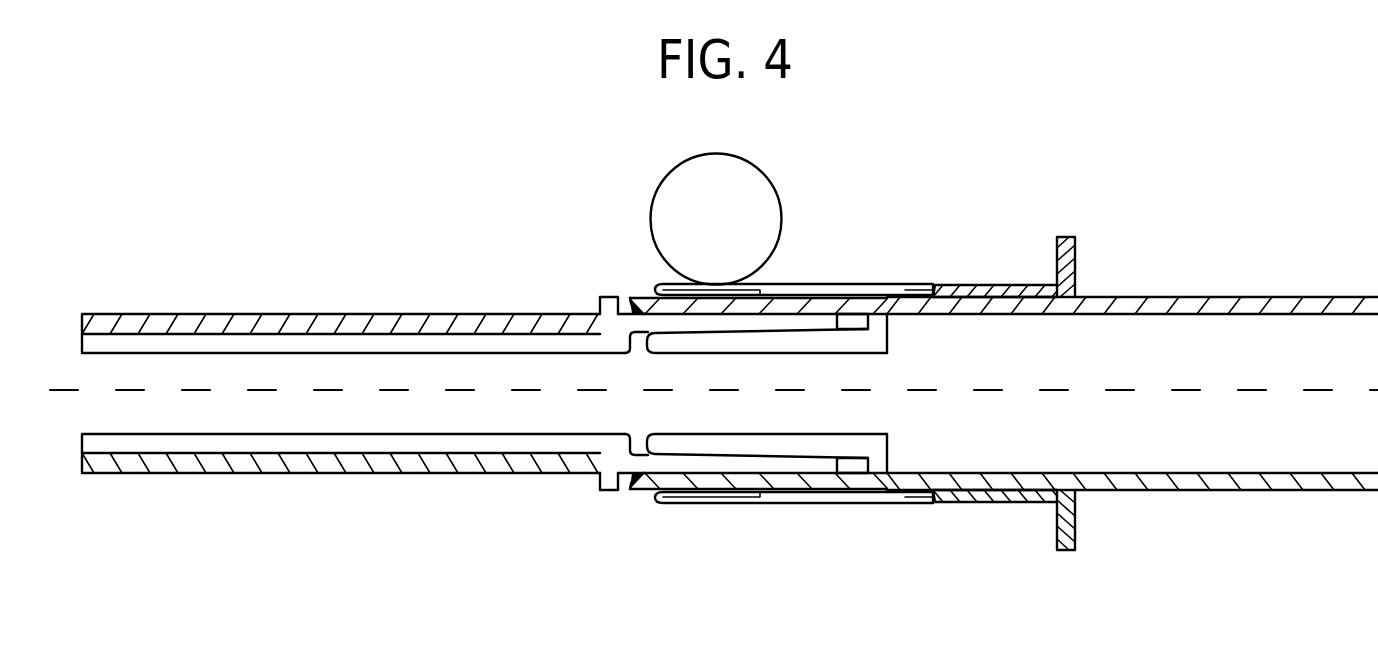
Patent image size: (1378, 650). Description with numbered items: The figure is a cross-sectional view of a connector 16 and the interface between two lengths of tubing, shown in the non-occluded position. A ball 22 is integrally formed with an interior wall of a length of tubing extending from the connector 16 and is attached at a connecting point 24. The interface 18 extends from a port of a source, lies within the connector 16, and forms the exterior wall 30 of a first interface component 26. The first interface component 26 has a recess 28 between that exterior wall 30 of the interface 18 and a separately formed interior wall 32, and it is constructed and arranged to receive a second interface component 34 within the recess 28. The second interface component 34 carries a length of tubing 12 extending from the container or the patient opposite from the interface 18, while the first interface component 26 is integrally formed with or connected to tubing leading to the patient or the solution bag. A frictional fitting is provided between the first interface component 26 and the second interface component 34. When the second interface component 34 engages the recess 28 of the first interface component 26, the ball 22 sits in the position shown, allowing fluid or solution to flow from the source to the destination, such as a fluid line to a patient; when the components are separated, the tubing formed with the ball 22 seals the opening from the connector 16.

The length of tubing 12 is at (132, 322).
The connector 16 is at (1003, 289).
The interface 18 is at (888, 286).
The ball 22 is at (680, 180).
The connecting point 24 is at (747, 280).
The first interface component 26 is at (910, 503).
The recess 28 is at (847, 463).
The exterior wall 30 is at (637, 483).
The interior wall 32 is at (720, 438).
The second interface component 34 is at (598, 300).